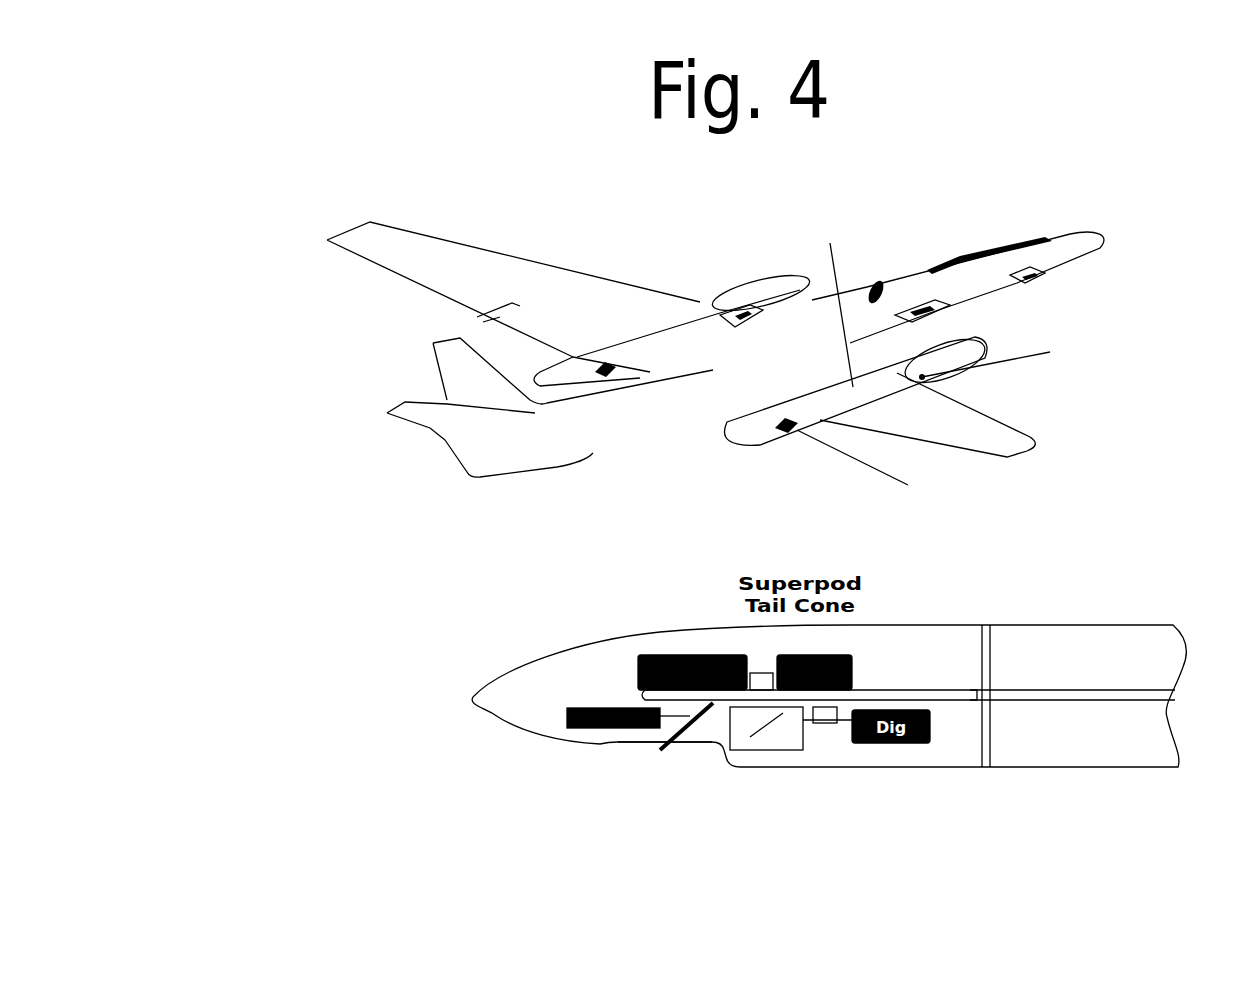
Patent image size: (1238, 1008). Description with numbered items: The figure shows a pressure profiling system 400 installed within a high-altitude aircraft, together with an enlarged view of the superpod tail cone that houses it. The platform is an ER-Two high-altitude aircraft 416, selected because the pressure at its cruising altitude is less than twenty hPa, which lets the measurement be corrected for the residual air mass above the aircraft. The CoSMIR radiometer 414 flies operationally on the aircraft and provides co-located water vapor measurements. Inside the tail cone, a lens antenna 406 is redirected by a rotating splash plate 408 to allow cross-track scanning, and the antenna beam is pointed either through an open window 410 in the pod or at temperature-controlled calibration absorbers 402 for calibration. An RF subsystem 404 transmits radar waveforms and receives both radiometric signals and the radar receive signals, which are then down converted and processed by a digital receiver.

The ER-2 high-altitude aircraft 416 is at (290, 208).
The CoSMIR radiometer 414 is at (848, 344).
The pressure profiling system 400 is at (953, 370).
The temperature-controlled calibration absorbers 402 is at (628, 677).
The RF subsystem 404 is at (848, 656).
The lens antenna 406 is at (776, 746).
The rotating splash plate 408 is at (584, 772).
The open window 410 is at (675, 810).